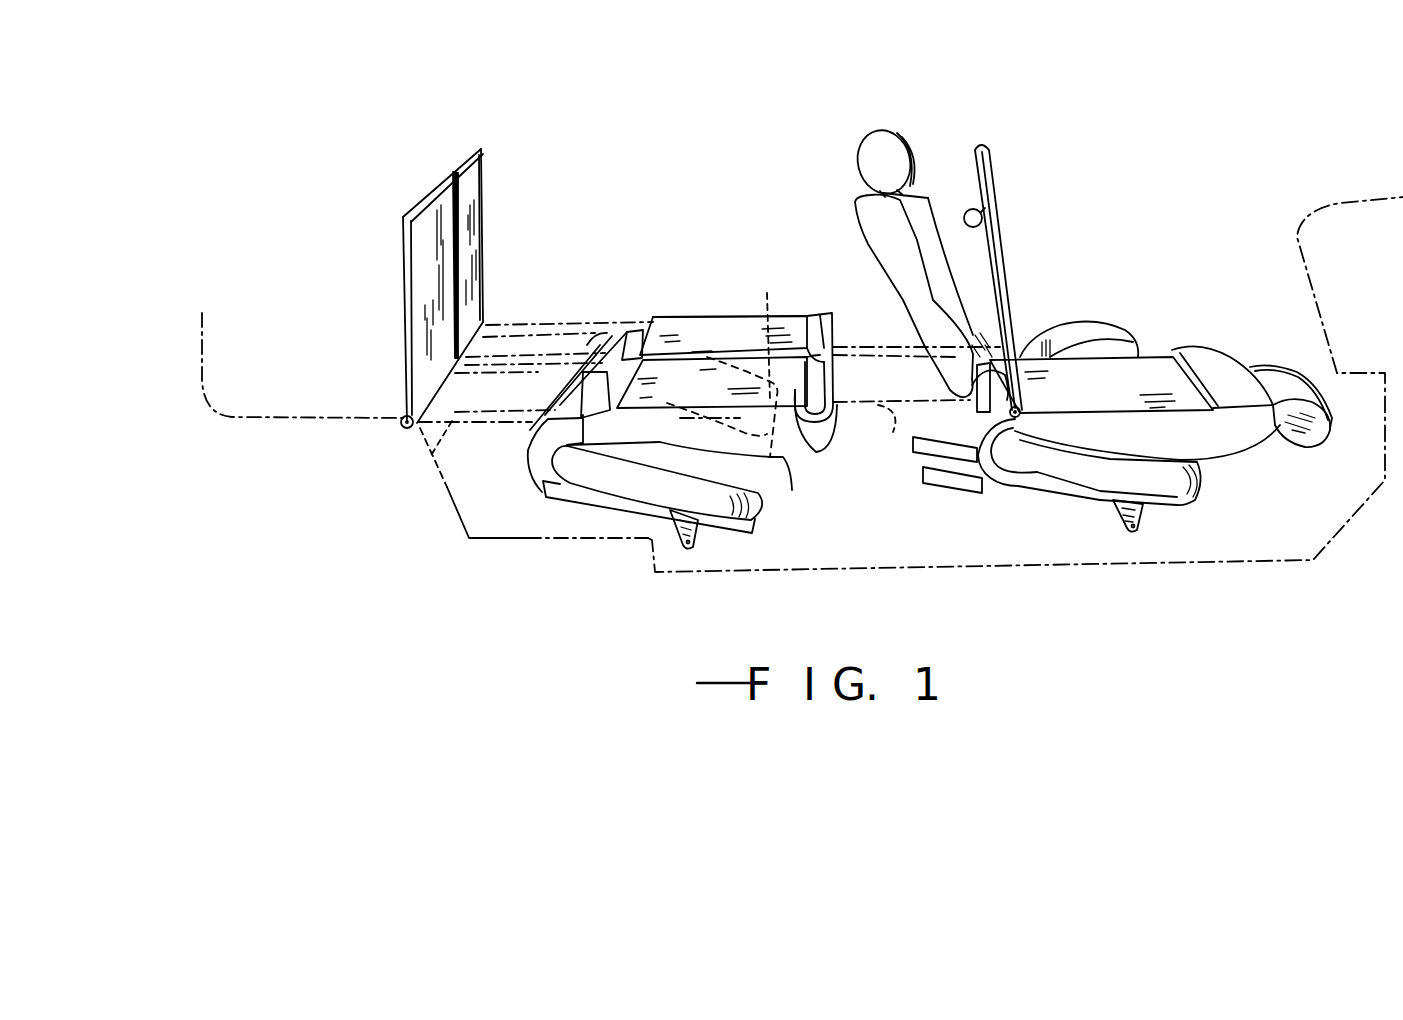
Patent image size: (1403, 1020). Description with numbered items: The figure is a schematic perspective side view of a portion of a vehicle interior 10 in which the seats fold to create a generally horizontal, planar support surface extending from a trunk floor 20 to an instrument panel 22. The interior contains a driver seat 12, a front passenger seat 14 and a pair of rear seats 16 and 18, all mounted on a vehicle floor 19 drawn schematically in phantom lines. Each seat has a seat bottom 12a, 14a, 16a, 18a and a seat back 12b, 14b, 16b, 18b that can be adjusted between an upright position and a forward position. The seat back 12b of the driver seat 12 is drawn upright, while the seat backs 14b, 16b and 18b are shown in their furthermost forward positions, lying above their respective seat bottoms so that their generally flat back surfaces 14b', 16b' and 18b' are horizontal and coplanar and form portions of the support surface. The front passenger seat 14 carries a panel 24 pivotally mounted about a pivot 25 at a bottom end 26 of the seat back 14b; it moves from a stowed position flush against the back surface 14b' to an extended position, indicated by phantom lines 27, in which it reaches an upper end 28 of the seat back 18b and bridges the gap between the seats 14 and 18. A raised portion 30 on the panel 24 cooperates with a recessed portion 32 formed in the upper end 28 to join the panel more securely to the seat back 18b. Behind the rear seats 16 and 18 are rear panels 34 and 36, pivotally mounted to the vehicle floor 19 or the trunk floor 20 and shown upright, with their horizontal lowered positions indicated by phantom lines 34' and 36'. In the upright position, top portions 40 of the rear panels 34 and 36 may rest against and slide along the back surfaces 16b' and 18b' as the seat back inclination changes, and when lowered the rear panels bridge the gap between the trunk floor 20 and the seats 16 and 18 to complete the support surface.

The vehicle interior 10 is at (1140, 157).
The driver seat 12 is at (920, 192).
The seat bottom 12a is at (1093, 313).
The seat back 12b is at (858, 195).
The front passenger seat 14 is at (1243, 453).
The seat bottom 14a is at (1197, 468).
The seat back 14b is at (1222, 341).
The back surface 14b' is at (1097, 383).
The rear seat 16 is at (700, 313).
The seat bottom 16a is at (767, 332).
The seat back 16b is at (820, 326).
The back surface 16b' is at (723, 335).
The rear seat 18 is at (599, 467).
The seat bottom 18a is at (765, 497).
The seat back 18b is at (699, 427).
The back surface 18b' is at (712, 407).
The vehicle floor 19 is at (972, 564).
The trunk floor 20 is at (310, 417).
The instrument panel 22 is at (1293, 237).
The panel 24 is at (1003, 237).
The pivot 25 is at (1028, 438).
The bottom end 26 is at (1013, 411).
The phantom lines 27 is at (893, 428).
The upper end 28 is at (838, 378).
The raised portion 30 is at (982, 210).
The recessed portion 32 is at (800, 440).
The rear panel 34 is at (523, 230).
The phantom lines 34' is at (741, 294).
The rear panel 36 is at (394, 300).
The phantom lines 36' is at (667, 418).
The top portions 40 is at (468, 155).